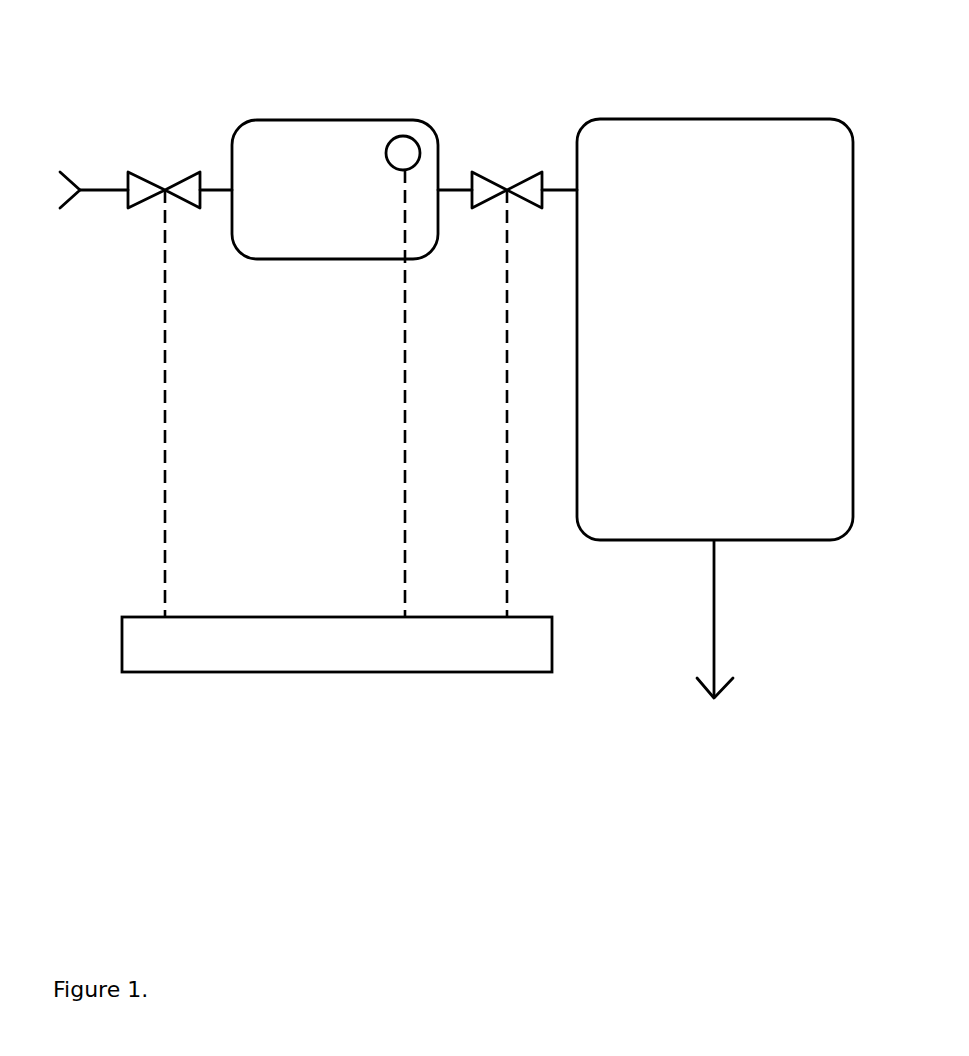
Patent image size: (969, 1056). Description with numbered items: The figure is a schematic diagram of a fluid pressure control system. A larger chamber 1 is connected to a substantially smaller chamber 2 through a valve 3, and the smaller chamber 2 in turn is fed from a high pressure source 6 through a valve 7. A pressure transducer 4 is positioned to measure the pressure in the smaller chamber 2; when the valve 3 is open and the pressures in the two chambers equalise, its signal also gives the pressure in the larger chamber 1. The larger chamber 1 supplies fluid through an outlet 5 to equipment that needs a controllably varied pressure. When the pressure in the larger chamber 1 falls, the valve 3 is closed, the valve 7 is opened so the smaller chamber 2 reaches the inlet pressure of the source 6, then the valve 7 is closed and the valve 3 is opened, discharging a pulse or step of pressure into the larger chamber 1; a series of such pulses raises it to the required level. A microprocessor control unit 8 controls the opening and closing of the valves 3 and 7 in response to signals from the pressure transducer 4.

The larger chamber 1 is at (687, 147).
The smaller chamber 2 is at (269, 231).
The valve 3 is at (483, 187).
The pressure transducer 4 is at (403, 153).
The outlet 5 is at (724, 737).
The high pressure source 6 is at (42, 203).
The valve 7 is at (138, 196).
The microprocessor control unit 8 is at (276, 652).